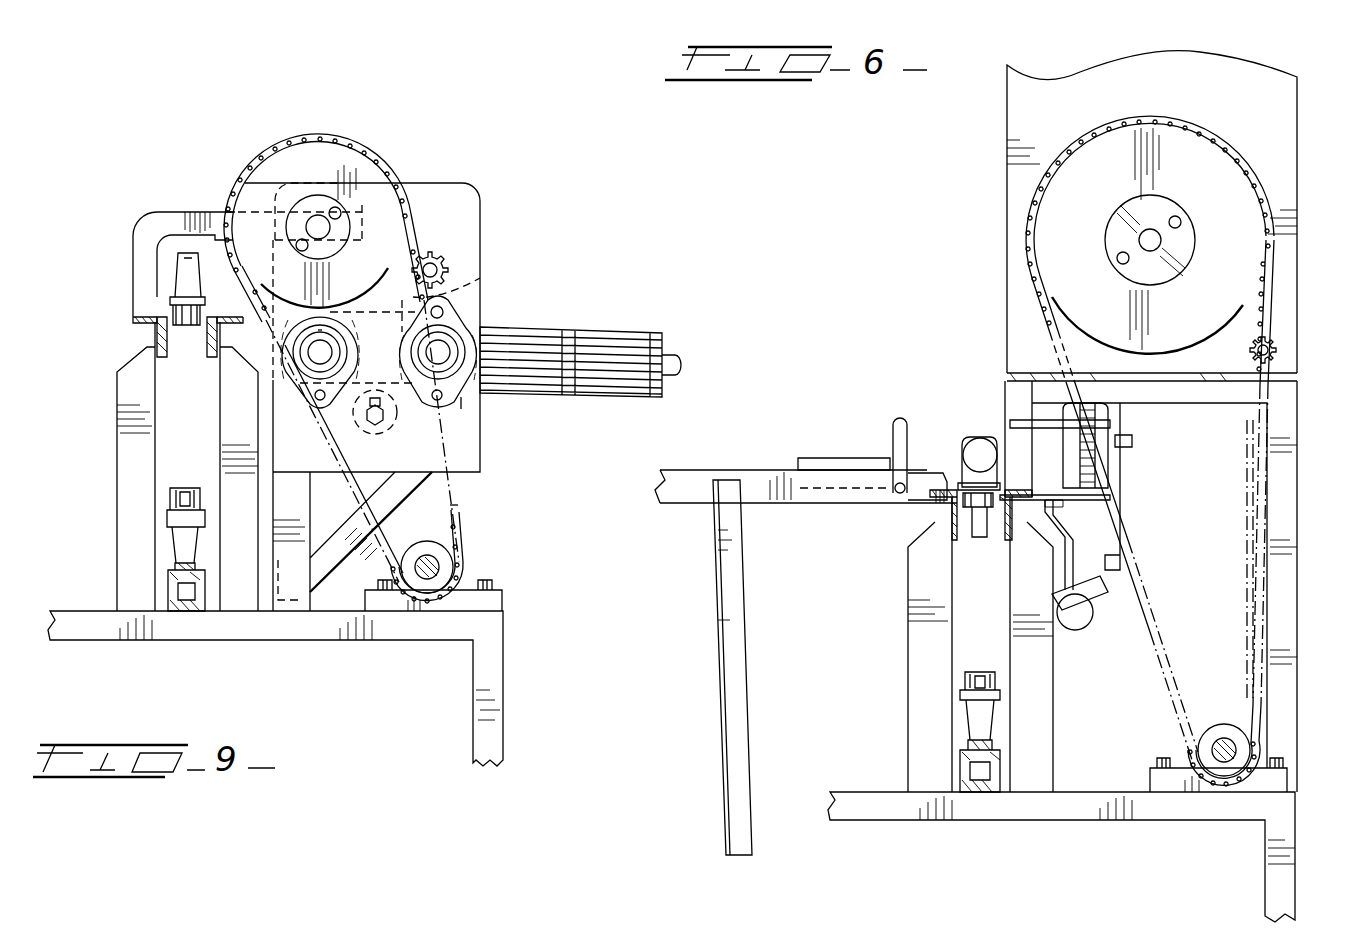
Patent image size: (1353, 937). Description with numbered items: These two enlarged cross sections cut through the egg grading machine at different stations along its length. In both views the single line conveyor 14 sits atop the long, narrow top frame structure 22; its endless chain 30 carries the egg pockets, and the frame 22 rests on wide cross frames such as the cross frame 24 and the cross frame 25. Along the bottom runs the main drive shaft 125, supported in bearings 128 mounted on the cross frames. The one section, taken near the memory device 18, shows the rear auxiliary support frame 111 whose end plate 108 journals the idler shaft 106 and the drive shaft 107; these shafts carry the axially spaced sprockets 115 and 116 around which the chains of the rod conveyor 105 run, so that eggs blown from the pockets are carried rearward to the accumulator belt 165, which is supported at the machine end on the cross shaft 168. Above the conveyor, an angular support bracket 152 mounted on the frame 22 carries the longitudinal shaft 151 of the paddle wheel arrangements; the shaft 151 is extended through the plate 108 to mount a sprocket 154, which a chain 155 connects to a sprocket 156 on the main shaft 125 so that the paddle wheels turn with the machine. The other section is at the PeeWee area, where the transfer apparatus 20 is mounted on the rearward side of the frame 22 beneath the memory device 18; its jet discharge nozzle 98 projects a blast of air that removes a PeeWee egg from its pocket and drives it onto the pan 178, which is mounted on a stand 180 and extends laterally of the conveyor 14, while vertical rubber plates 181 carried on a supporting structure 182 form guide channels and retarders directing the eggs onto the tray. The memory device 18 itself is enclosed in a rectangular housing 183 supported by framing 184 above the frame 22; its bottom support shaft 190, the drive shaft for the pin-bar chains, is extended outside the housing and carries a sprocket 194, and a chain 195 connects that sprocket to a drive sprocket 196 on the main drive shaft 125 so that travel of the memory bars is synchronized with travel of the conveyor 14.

In FIG. 6, the single line conveyor 14 is at (953, 429).
In FIG. 6, the memory device 18 is at (1007, 152).
In FIG. 6, the transfer apparatus 20 is at (1146, 434).
In FIG. 9, the top frame structure 22 is at (117, 460).
In FIG. 6, the top frame structure 22 is at (908, 697).
In FIG. 6, the cross frame 24 is at (1295, 853).
In FIG. 9, the cross frame 25 is at (503, 665).
In FIG. 9, the endless chain 30 is at (200, 312).
In FIG. 6, the endless chain 30 is at (963, 500).
In FIG. 6, the jet discharge nozzle 98 is at (1012, 421).
In FIG. 9, the rod conveyor 105 is at (478, 279).
In FIG. 9, the idler shaft 106 is at (306, 370).
In FIG. 9, the drive shaft 107 is at (441, 350).
In FIG. 9, the end plate 108 is at (470, 226).
In FIG. 9, the auxiliary support frame 111 is at (371, 541).
In FIG. 9, the sprocket 115 is at (350, 345).
In FIG. 9, the sprocket 116 is at (461, 412).
In FIG. 9, the main drive shaft 125 is at (438, 562).
In FIG. 6, the main drive shaft 125 is at (1224, 740).
In FIG. 9, the bearings 128 is at (462, 590).
In FIG. 6, the bearings 128 is at (1200, 730).
In FIG. 9, the longitudinal shaft 151 is at (320, 224).
In FIG. 9, the support bracket 152 is at (184, 212).
In FIG. 9, the sprocket 154 is at (373, 206).
In FIG. 9, the chain 155 is at (455, 513).
In FIG. 9, the sprocket 156 is at (437, 548).
In FIG. 9, the accumulator belt 165 is at (533, 400).
In FIG. 9, the cross shaft 168 is at (668, 357).
In FIG. 6, the pan 178 is at (752, 470).
In FIG. 6, the stand 180 is at (742, 610).
In FIG. 6, the plates 181 is at (857, 458).
In FIG. 6, the supporting structure 182 is at (898, 430).
In FIG. 6, the housing 183 is at (1007, 238).
In FIG. 6, the framing 184 is at (1290, 437).
In FIG. 6, the bottom support shaft 190 is at (1160, 246).
In FIG. 6, the sprocket 194 is at (1218, 160).
In FIG. 6, the chain 195 is at (1250, 546).
In FIG. 6, the drive sprocket 196 is at (1244, 740).